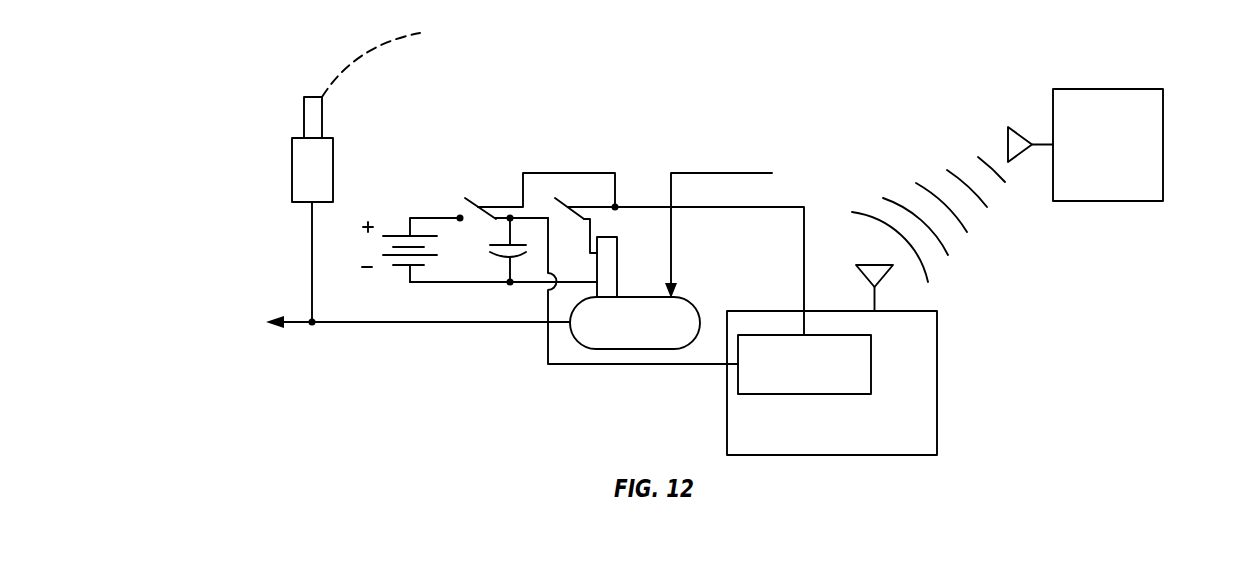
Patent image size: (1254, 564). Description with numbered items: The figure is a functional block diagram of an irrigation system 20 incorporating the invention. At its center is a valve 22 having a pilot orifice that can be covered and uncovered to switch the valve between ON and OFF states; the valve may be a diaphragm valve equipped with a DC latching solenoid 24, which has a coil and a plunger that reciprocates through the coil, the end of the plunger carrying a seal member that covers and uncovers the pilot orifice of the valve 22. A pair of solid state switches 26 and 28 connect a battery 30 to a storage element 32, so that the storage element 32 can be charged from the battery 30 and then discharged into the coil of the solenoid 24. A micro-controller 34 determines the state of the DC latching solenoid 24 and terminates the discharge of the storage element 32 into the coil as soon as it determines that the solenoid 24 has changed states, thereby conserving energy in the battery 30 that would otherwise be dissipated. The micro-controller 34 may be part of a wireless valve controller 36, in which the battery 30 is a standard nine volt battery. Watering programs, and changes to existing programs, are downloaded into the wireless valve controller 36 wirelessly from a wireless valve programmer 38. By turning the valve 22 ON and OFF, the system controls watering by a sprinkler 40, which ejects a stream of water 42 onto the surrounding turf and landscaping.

The irrigation system 20 is at (510, 416).
The valve 22 is at (690, 300).
The DC latching solenoid 24 is at (617, 266).
The solid state switch 26 is at (465, 198).
The solid state switch 28 is at (555, 198).
The battery 30 is at (396, 270).
The storage element 32 is at (490, 248).
The micro-controller 34 is at (871, 358).
The wireless valve controller 36 is at (862, 371).
The wireless valve programmer 38 is at (1108, 201).
The sprinkler 40 is at (333, 170).
The stream of water 42 is at (415, 33).